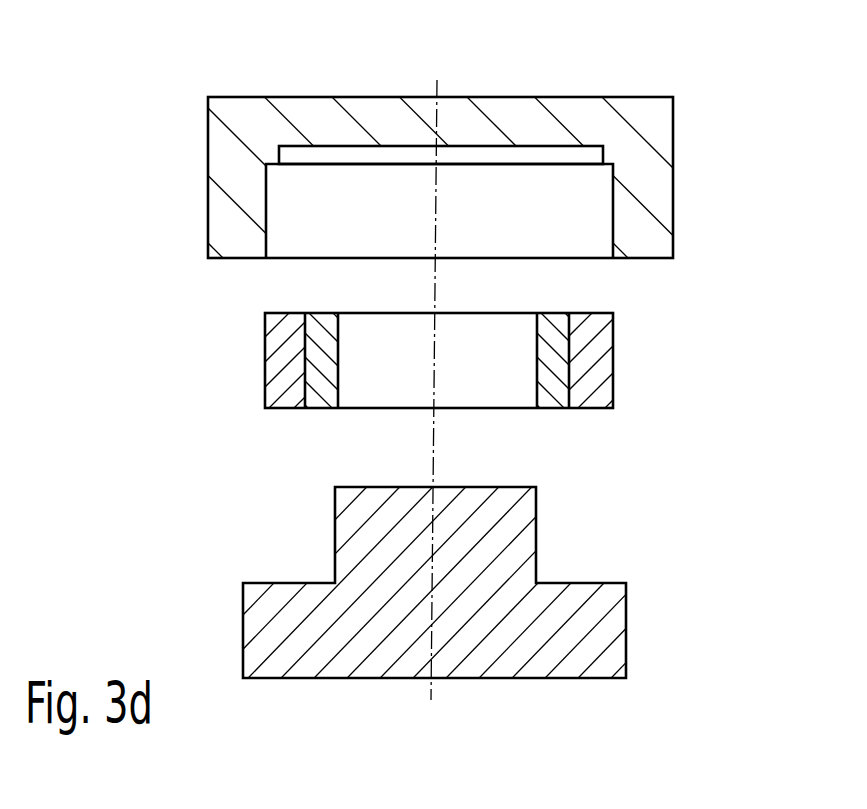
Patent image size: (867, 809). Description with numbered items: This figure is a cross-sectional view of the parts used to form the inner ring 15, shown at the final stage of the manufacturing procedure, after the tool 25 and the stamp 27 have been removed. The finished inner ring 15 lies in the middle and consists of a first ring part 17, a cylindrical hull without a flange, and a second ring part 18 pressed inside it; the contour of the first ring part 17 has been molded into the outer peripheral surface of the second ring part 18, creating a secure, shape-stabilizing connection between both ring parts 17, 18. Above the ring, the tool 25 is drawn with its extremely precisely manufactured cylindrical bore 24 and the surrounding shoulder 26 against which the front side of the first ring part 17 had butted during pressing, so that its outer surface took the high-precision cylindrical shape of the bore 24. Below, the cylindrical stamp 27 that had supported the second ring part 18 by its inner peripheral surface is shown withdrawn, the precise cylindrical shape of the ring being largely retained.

The inner ring 15 is at (648, 361).
The first ring part 17 is at (470, 383).
The second ring part 18 is at (514, 364).
The cylindrical bore 24 is at (441, 96).
The tool 25 is at (412, 141).
The shoulder 26 is at (410, 143).
The cylindrical stamp 27 is at (489, 616).